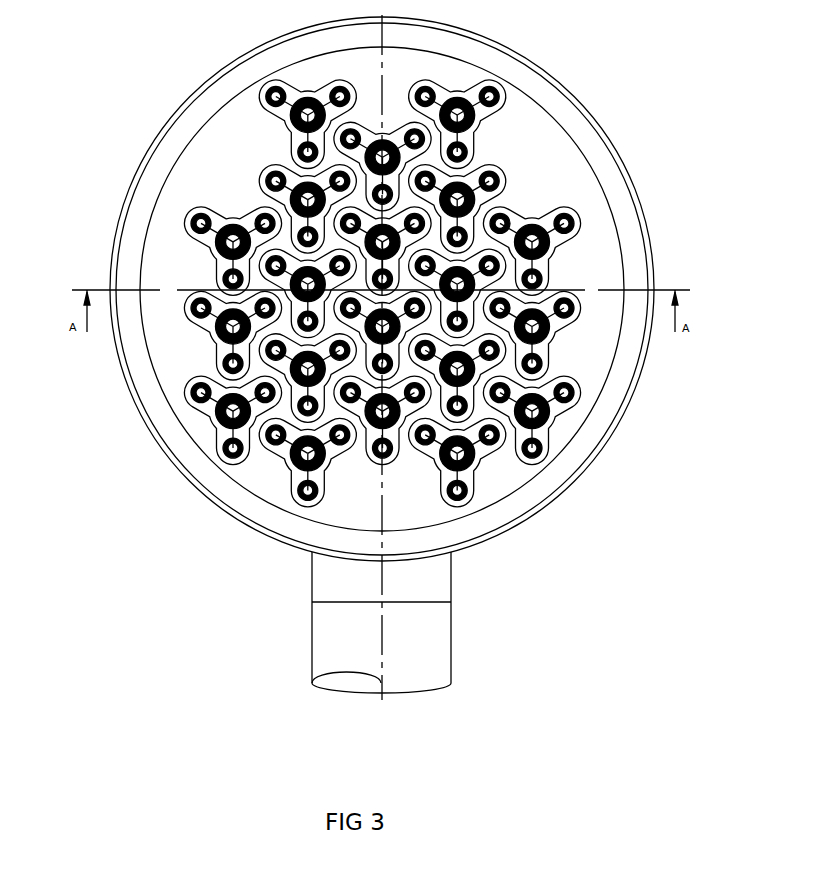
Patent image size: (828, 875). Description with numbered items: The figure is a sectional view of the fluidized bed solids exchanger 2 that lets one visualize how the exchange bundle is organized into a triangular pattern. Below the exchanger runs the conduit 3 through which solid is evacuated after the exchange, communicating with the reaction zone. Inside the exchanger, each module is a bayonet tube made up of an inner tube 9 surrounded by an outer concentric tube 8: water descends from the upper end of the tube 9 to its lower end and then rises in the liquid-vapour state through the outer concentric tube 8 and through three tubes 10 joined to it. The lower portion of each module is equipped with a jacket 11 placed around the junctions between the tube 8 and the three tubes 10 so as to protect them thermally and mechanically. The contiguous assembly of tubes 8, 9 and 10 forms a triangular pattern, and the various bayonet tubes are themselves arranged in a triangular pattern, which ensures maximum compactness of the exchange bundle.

The fluidized bed solids exchanger 2 is at (154, 438).
The conduit for evacuating solid 3 is at (451, 632).
The outer concentric tube 8 is at (474, 121).
The tube 9 is at (477, 116).
The three tubes 10 is at (512, 109).
The jacket 11 is at (543, 437).